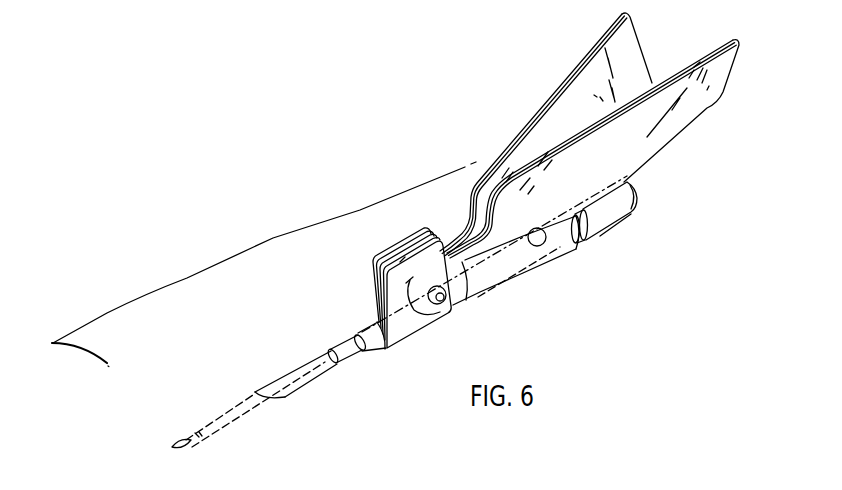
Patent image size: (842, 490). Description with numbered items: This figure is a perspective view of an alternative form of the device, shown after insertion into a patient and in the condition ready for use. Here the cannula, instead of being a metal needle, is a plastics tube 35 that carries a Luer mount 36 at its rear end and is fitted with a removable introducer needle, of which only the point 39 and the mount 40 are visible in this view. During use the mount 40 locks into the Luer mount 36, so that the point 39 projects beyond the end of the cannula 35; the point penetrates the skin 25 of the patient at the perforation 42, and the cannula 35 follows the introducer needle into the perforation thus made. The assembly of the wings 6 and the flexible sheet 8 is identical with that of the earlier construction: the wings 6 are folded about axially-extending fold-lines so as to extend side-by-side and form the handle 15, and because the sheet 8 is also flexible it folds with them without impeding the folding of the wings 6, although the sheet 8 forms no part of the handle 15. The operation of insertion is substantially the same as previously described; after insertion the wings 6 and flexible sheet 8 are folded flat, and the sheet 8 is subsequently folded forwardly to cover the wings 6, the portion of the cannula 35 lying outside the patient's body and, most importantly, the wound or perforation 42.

The flexible sheet 8 is at (678, 117).
The skin 25 is at (190, 285).
The handle 15 is at (380, 281).
The wings 6 is at (373, 278).
The Luer mount 36 is at (533, 270).
The mount 40 is at (610, 227).
The plastics tube 35 is at (310, 401).
The perforation 42 is at (280, 397).
The point 39 is at (193, 442).